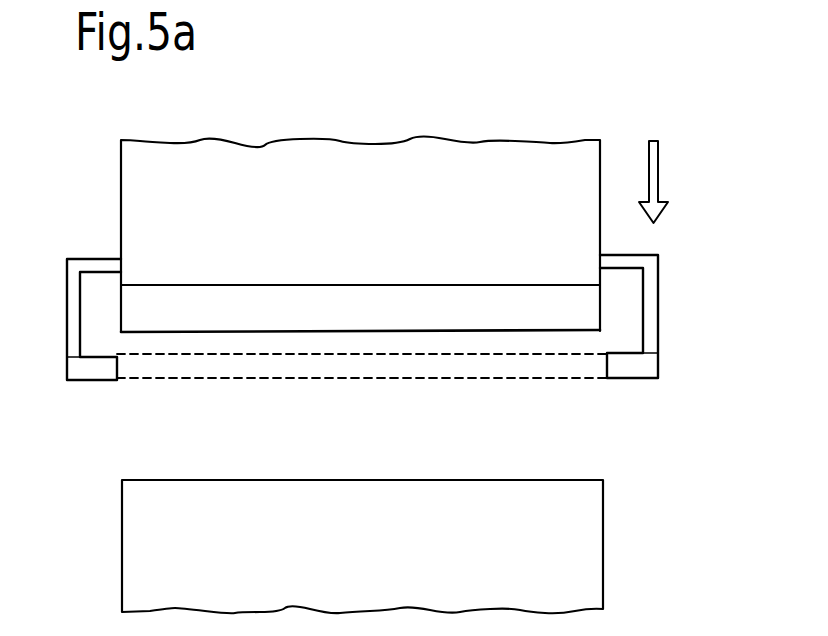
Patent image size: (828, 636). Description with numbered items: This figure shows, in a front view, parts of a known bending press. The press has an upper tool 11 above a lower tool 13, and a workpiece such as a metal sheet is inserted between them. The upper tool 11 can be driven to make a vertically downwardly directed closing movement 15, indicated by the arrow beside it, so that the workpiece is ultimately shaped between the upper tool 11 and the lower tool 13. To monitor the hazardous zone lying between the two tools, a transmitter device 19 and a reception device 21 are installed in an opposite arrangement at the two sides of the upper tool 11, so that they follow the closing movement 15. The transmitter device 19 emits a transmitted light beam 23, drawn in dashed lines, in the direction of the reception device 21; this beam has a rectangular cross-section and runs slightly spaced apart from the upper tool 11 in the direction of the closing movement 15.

The upper tool 11 is at (136, 172).
The lower tool 13 is at (145, 568).
The closing movement 15 is at (655, 152).
The transmitter device 19 is at (636, 368).
The reception device 21 is at (102, 369).
The transmitted light beam 23 is at (483, 369).